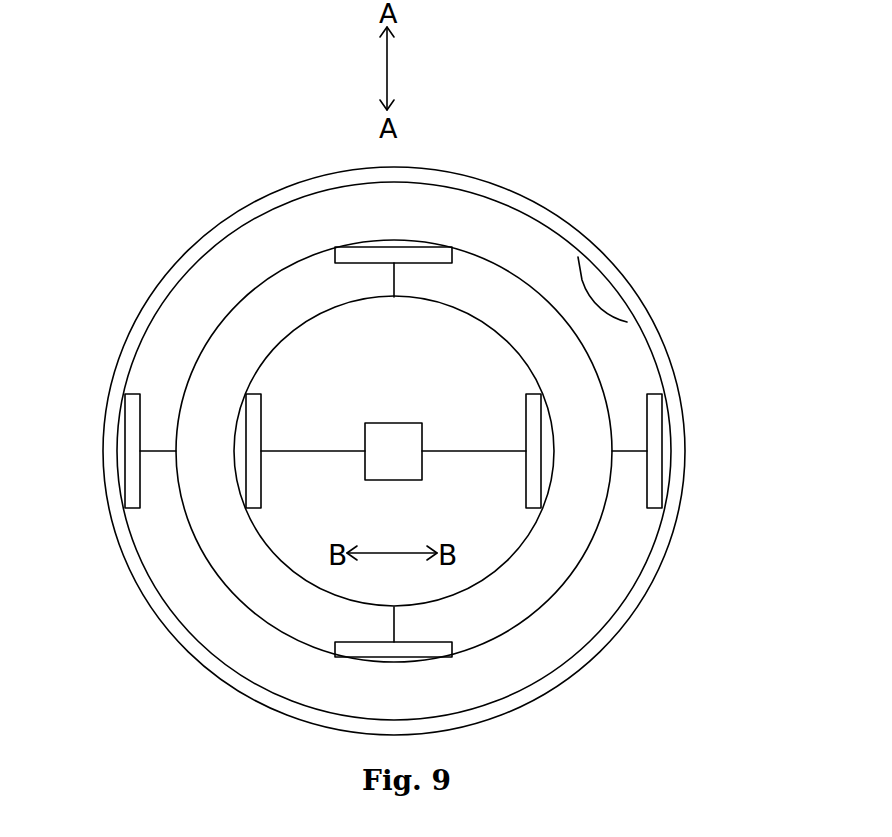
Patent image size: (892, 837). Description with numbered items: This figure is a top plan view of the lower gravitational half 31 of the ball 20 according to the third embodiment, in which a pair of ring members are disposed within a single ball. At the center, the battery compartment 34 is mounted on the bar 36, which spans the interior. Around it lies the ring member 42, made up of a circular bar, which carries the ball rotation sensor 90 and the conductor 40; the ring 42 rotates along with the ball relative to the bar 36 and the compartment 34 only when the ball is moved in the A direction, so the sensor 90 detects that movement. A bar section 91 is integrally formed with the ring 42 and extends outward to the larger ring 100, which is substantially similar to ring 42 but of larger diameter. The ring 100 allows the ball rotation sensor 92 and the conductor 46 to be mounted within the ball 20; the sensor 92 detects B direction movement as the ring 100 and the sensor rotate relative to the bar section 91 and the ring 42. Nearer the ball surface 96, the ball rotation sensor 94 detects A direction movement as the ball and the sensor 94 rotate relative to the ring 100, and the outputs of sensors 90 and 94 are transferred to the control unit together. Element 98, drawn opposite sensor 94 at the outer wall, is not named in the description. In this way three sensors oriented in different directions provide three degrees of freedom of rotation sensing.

The ball 20 is at (632, 173).
The lower gravitational half 31 is at (617, 698).
The battery compartment 34 is at (384, 437).
The bar 36 is at (322, 453).
The conductor 40 is at (530, 490).
The ring member 42 is at (318, 587).
The conductor 46 is at (388, 647).
The ball rotation sensor 90 is at (253, 428).
The bar section 91 is at (396, 275).
The ball rotation sensor 92 is at (420, 255).
The ball rotation sensor 94 is at (133, 417).
The ball surface 96 is at (627, 322).
The outer plate 98 is at (652, 432).
The ring 100 is at (578, 565).